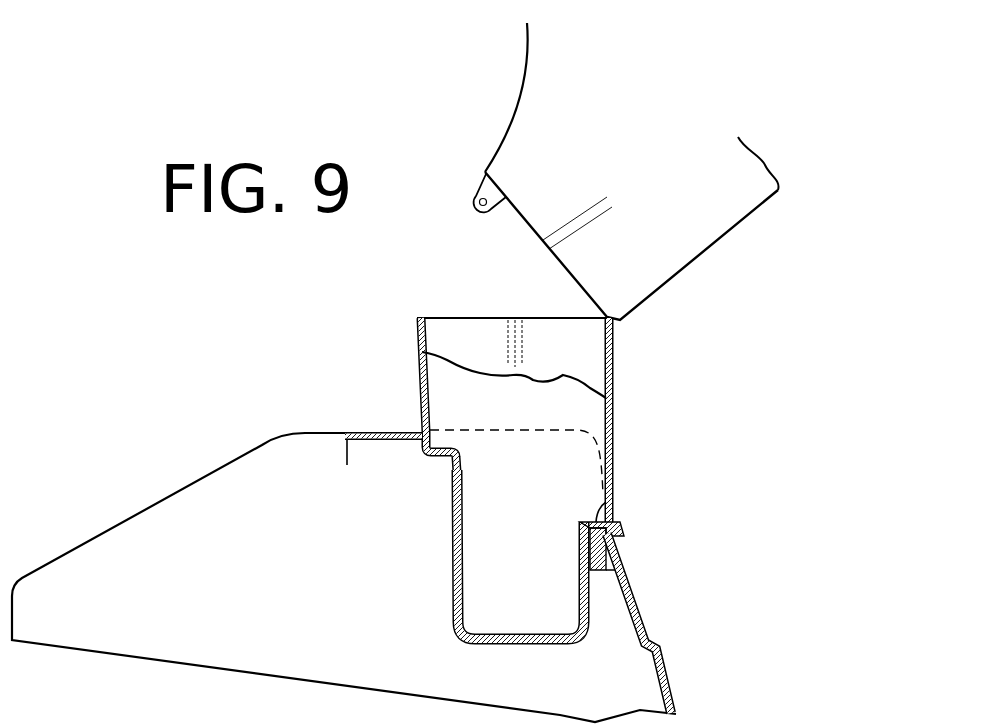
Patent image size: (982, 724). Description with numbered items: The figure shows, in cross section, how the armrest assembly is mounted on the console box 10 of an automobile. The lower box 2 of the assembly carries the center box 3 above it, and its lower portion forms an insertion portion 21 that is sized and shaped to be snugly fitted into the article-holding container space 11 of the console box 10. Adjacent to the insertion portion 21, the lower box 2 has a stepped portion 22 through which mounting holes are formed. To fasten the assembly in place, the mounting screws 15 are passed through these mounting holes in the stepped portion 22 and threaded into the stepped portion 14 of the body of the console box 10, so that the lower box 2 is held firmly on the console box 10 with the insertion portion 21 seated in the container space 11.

The lower box 2 is at (613, 428).
The center box 3 is at (688, 243).
The console box 10 is at (372, 432).
The article-holding container space 11 is at (458, 554).
The stepped portion 14 is at (619, 524).
The mounting screws 15 is at (597, 514).
The insertion portion 21 is at (589, 609).
The stepped portion 22 is at (582, 522).